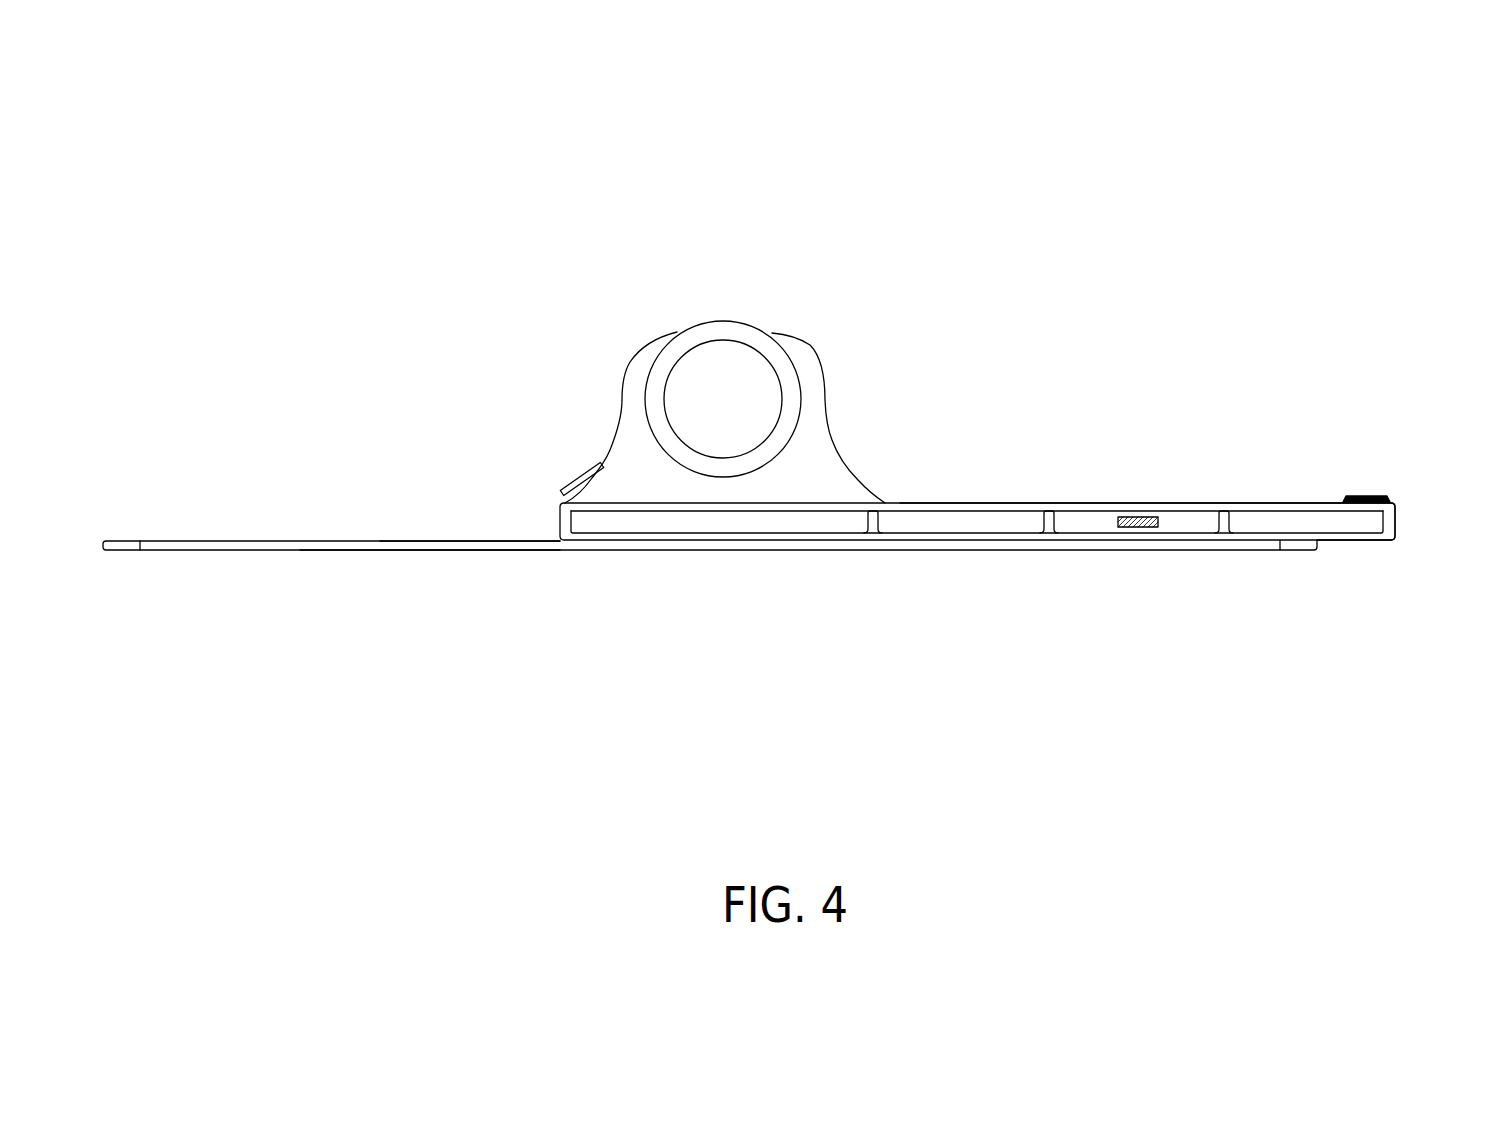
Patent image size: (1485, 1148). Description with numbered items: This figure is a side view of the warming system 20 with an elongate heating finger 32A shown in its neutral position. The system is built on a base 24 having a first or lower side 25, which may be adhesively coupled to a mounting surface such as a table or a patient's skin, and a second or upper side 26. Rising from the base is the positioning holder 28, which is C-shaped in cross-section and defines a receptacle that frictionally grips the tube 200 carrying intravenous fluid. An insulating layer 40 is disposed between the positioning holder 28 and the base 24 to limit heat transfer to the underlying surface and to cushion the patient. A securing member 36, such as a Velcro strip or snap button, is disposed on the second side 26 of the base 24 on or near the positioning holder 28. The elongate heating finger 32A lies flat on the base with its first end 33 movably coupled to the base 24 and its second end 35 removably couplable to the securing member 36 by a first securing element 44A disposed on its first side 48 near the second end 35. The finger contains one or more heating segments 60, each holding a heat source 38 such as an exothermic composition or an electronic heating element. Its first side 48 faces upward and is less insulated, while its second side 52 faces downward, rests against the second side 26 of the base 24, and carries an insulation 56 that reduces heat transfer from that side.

The warming system 20 is at (425, 148).
The base 24 is at (313, 547).
The first side 25 is at (415, 552).
The second side 26 is at (455, 540).
The positioning holder 28 is at (637, 365).
The tube 200 is at (748, 342).
The securing member 36 is at (585, 475).
The first end 33 is at (883, 498).
The insulating layer 40 is at (700, 525).
The elongate heating finger 32A is at (1070, 518).
The heat source 38 is at (1155, 515).
The first side 48 is at (1311, 502).
The first securing element 44A is at (1367, 497).
The second end 35 is at (1397, 517).
The heating segments 60 is at (1280, 530).
The insulation 56 is at (1293, 540).
The second side 52 is at (1358, 540).